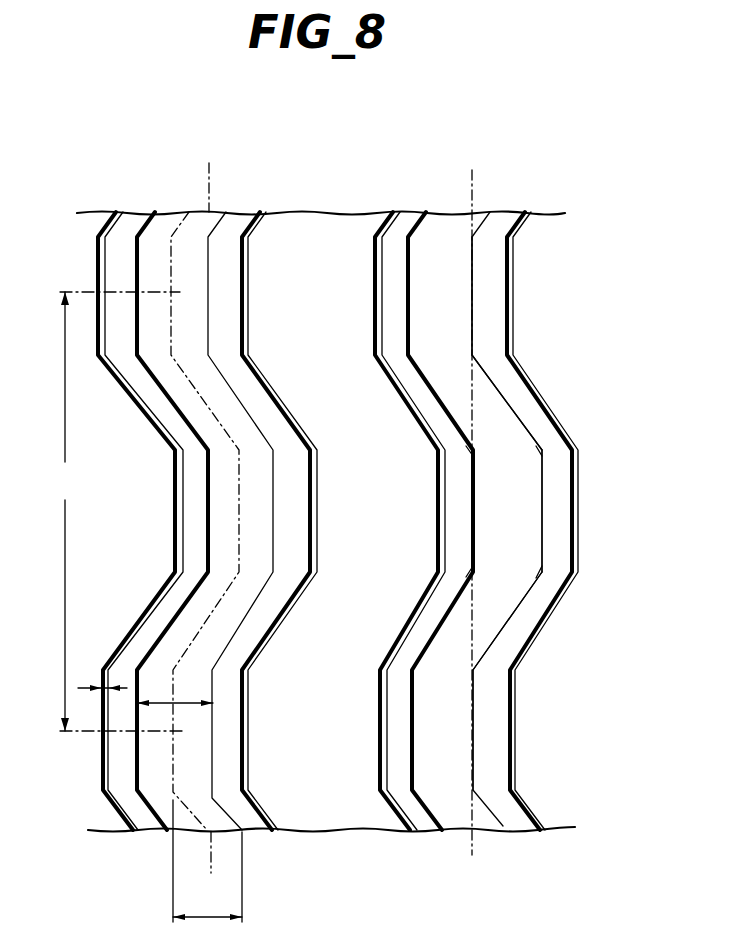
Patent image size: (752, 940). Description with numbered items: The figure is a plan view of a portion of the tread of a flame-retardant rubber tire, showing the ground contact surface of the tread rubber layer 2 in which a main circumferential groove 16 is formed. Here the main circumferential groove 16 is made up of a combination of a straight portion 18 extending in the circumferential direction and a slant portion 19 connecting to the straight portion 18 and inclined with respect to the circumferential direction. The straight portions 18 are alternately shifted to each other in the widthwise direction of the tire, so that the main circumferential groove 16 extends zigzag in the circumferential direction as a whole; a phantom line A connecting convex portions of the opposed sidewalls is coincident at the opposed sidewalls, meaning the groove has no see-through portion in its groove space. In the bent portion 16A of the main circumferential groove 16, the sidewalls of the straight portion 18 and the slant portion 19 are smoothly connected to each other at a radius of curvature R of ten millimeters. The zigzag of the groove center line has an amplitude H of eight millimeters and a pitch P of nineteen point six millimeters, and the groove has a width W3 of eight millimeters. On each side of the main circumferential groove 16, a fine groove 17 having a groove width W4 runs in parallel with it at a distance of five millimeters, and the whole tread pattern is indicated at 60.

The tread rubber layer 2 is at (543, 222).
The main circumferential groove 16 is at (158, 227).
The bent portion 16A is at (473, 442).
The fine groove 17 is at (120, 211).
The straight portion 18 is at (452, 313).
The slant portion 19 is at (492, 412).
The corrugated fin unit 60 is at (561, 167).
The phantom line A is at (207, 178).
The pitch P is at (121, 511).
The radius of curvature R is at (470, 443).
The groove width W3 is at (183, 703).
The groove width of fine groove W4 is at (103, 683).
The amplitude H is at (207, 861).